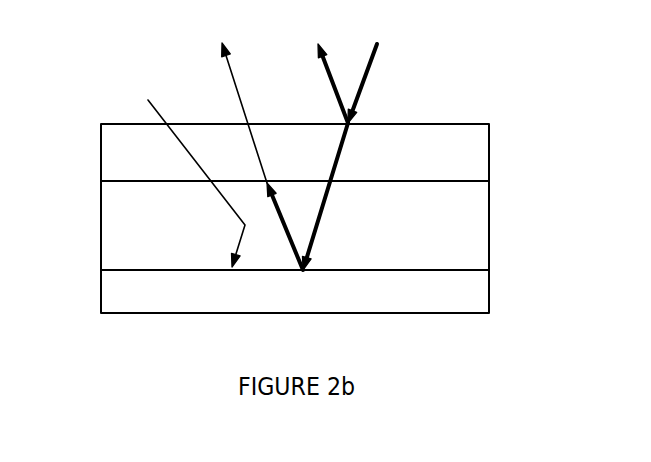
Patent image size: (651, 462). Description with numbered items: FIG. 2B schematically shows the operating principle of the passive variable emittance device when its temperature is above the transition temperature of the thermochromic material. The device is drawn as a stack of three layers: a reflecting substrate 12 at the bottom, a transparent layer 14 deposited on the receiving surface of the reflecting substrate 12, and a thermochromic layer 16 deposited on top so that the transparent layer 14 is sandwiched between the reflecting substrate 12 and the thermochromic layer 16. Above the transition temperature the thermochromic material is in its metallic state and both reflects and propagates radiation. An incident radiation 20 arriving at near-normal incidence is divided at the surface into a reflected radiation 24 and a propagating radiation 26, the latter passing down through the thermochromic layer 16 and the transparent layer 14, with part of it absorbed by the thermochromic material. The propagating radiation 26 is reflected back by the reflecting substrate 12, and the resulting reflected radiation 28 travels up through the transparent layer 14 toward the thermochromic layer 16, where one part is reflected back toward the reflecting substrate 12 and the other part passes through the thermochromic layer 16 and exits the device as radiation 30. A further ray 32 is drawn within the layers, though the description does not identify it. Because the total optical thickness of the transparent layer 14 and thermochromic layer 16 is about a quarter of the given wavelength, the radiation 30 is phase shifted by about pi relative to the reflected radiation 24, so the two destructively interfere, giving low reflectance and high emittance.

The reflecting substrate 12 is at (473, 293).
The transparent layer 14 is at (473, 232).
The thermochromic layer 16 is at (473, 152).
The incident radiation 20 is at (365, 83).
The reflected radiation 24 is at (333, 85).
The propagating radiation 26 is at (325, 200).
The reflected radiation 28 is at (280, 235).
The radiation reflected by the reflecting substrate 30 is at (238, 98).
The scattered/transmitted light ray 32 is at (187, 171).